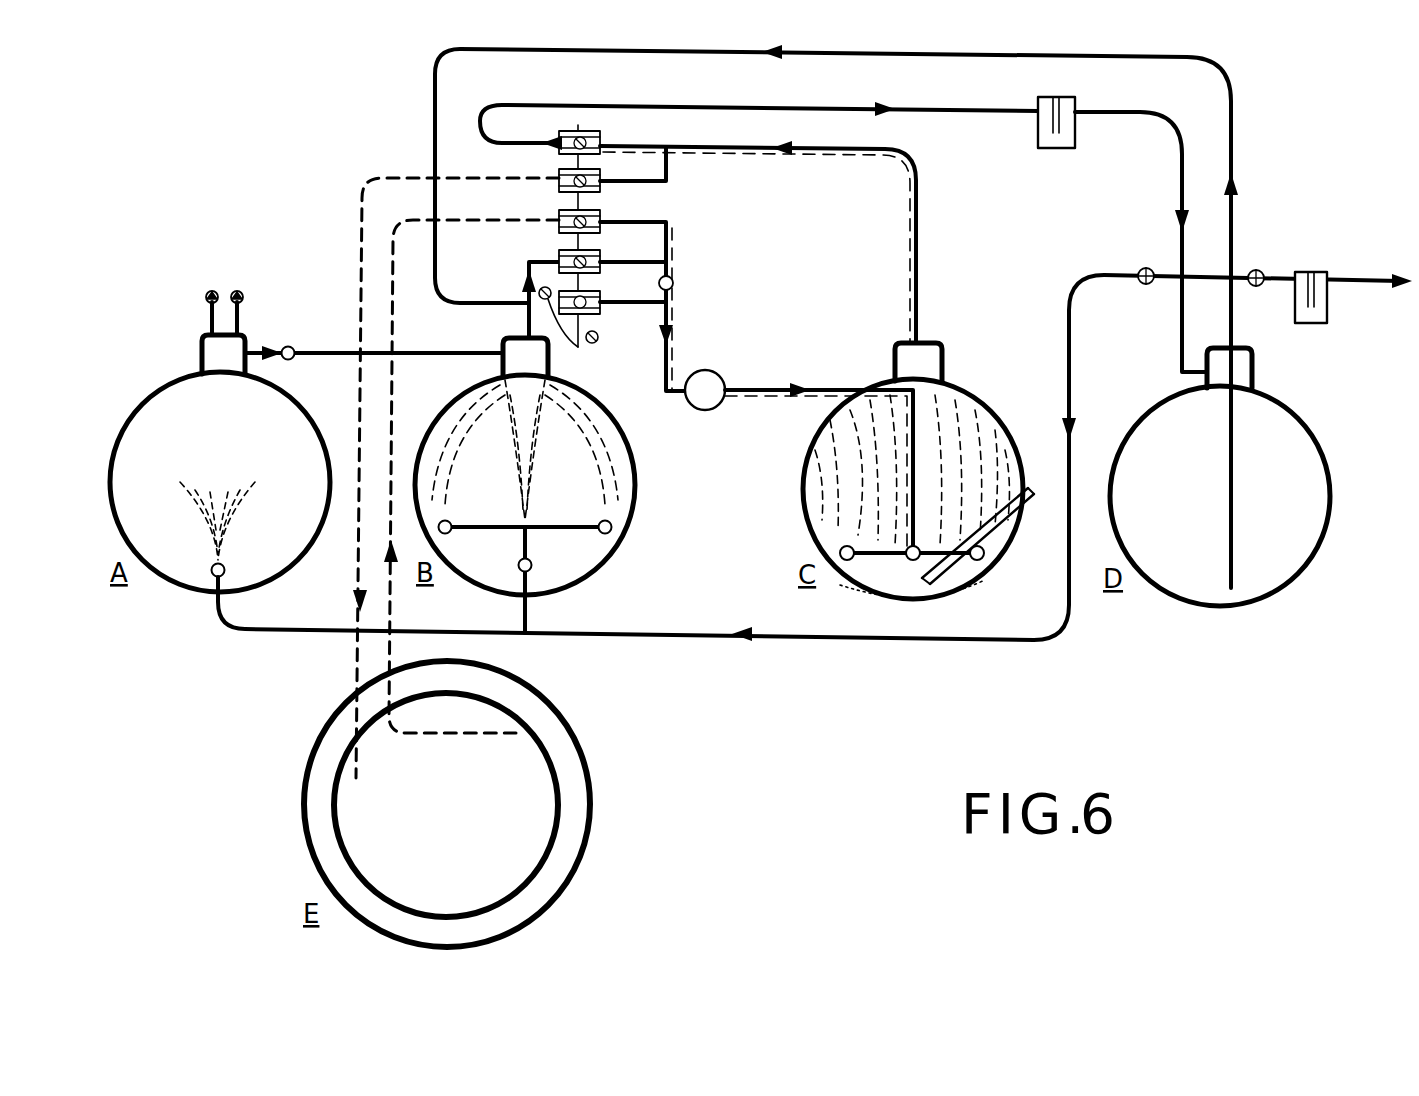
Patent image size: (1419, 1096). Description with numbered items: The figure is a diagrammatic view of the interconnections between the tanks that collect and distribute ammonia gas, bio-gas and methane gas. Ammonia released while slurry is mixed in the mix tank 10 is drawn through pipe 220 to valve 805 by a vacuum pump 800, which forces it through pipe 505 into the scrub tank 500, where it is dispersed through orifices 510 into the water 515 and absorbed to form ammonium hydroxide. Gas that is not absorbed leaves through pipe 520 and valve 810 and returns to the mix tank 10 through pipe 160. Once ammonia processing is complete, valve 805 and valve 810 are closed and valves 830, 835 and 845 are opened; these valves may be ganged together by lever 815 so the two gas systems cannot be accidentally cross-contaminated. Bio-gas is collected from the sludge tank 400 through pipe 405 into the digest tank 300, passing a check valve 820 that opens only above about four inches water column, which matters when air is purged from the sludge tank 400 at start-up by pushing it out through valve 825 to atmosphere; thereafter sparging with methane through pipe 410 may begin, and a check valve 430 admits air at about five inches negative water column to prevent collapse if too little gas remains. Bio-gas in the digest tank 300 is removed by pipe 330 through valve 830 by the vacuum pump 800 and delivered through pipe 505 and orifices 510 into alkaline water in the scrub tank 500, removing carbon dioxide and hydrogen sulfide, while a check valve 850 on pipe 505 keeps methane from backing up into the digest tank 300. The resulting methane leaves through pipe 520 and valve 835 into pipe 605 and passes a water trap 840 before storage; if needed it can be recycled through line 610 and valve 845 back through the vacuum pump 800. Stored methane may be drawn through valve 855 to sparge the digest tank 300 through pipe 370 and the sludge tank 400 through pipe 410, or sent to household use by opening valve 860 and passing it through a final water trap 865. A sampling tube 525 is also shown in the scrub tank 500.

The mix tank 10 is at (520, 766).
The pipe 160 is at (353, 650).
The pipe 220 is at (392, 650).
The digest tank 300 is at (592, 548).
The pipe 330 is at (524, 258).
The pipe 370 is at (532, 614).
The sludge tank 400 is at (183, 574).
The pipe 405 is at (318, 348).
The pipe 410 is at (237, 617).
The check valve 430 is at (241, 296).
The scrub tank 500 is at (812, 497).
The pipe 505 is at (780, 385).
The orifices 510 is at (848, 562).
The water 515 is at (912, 537).
The pipe 520 is at (922, 277).
The sampling tube 525 is at (1035, 500).
The pipe 605 is at (1178, 245).
The line 610 is at (1230, 338).
The vacuum pump 800 is at (712, 368).
The valve 805 is at (604, 215).
The valve 810 is at (558, 172).
The lever 815 is at (580, 347).
The check valve 820 is at (291, 360).
The valve 825 is at (206, 296).
The valve 830 is at (604, 254).
The valve 835 is at (604, 137).
The water trap 840 is at (1077, 140).
The valve 845 is at (602, 294).
The check valve 850 is at (675, 283).
The valve 855 is at (1141, 289).
The valve 860 is at (1264, 268).
The water trap 865 is at (1332, 307).